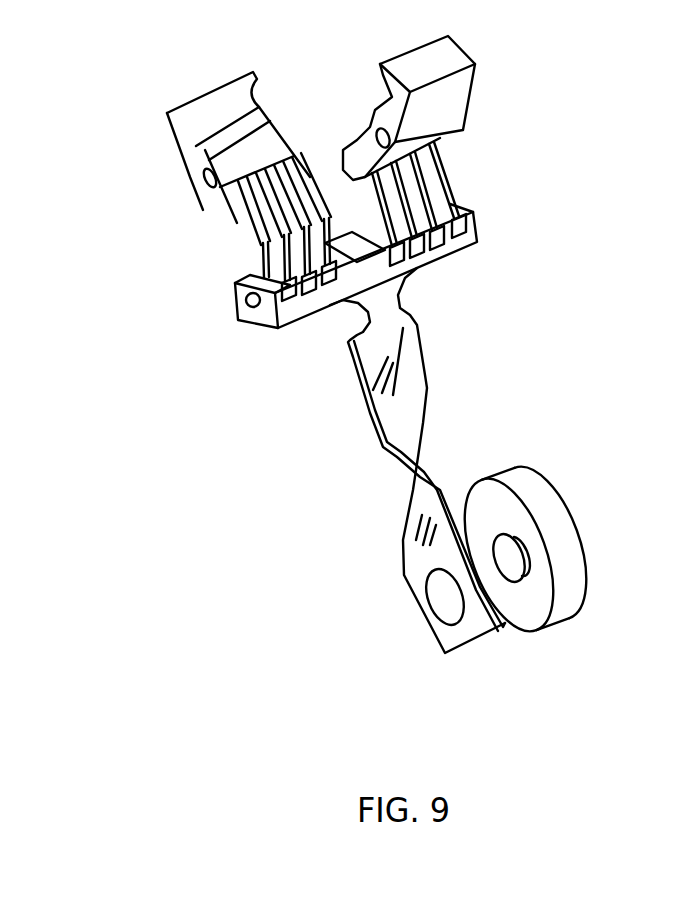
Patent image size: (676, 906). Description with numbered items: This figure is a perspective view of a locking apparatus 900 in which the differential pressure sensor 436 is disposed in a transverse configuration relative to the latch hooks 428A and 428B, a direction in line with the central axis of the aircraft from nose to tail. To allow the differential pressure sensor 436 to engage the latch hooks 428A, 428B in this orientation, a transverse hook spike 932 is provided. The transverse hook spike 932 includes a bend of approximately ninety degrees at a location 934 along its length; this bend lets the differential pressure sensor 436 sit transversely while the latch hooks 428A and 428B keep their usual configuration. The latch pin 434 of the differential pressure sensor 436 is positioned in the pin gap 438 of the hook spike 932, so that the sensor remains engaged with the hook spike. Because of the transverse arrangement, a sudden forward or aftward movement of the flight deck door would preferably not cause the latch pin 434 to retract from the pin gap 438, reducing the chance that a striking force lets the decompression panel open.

The locking apparatus 900 is at (52, 111).
The latch hook 428A is at (203, 118).
The latch hook 428B is at (457, 88).
The transverse hook spike 932 is at (410, 392).
The location of the bend 934 is at (297, 472).
The differential pressure sensor 436 is at (538, 508).
The latch pin 434 is at (517, 574).
The pin gap 438 is at (452, 603).